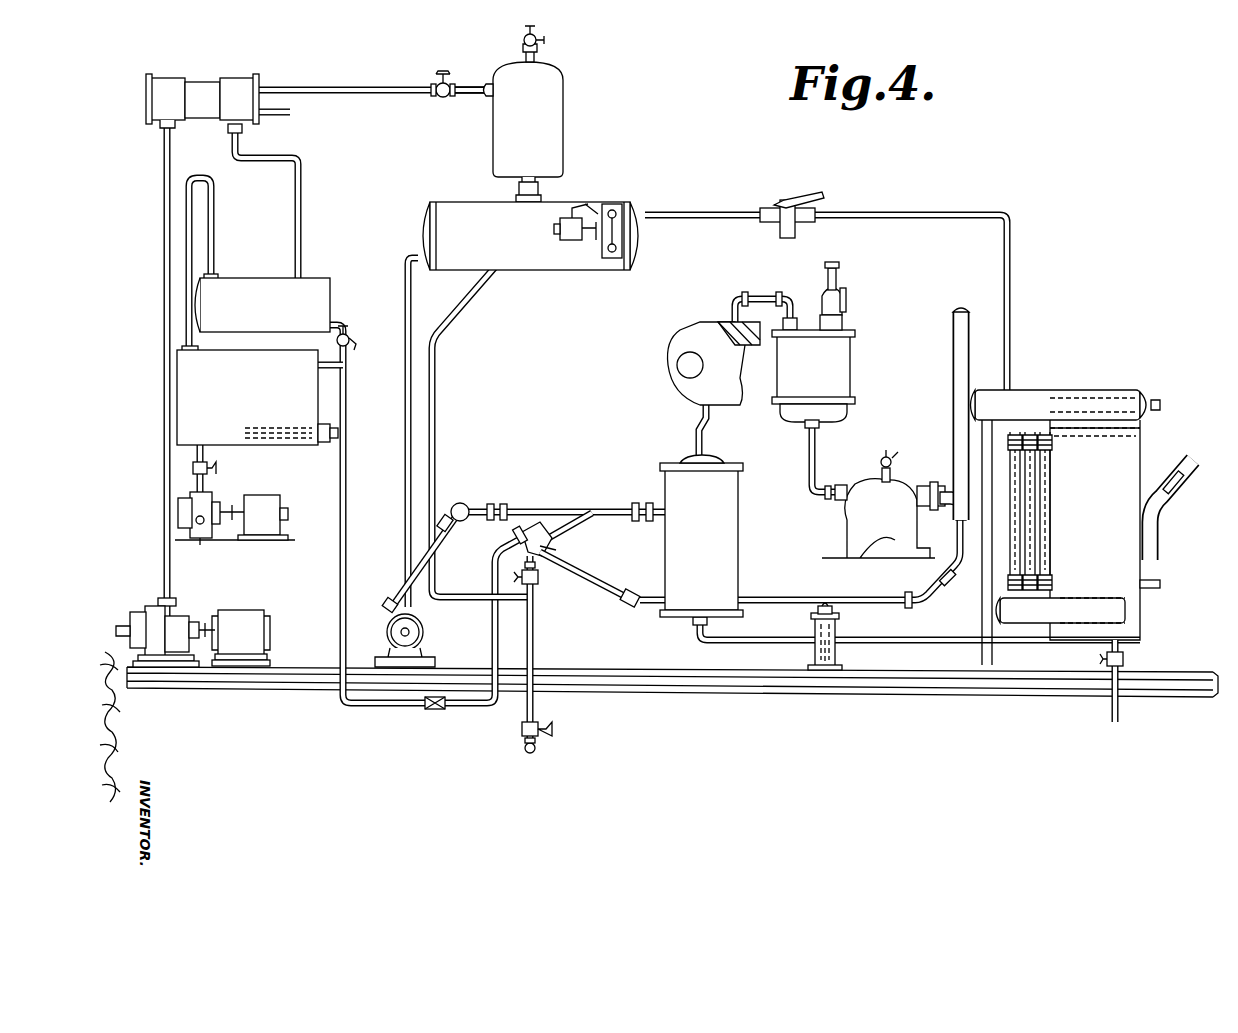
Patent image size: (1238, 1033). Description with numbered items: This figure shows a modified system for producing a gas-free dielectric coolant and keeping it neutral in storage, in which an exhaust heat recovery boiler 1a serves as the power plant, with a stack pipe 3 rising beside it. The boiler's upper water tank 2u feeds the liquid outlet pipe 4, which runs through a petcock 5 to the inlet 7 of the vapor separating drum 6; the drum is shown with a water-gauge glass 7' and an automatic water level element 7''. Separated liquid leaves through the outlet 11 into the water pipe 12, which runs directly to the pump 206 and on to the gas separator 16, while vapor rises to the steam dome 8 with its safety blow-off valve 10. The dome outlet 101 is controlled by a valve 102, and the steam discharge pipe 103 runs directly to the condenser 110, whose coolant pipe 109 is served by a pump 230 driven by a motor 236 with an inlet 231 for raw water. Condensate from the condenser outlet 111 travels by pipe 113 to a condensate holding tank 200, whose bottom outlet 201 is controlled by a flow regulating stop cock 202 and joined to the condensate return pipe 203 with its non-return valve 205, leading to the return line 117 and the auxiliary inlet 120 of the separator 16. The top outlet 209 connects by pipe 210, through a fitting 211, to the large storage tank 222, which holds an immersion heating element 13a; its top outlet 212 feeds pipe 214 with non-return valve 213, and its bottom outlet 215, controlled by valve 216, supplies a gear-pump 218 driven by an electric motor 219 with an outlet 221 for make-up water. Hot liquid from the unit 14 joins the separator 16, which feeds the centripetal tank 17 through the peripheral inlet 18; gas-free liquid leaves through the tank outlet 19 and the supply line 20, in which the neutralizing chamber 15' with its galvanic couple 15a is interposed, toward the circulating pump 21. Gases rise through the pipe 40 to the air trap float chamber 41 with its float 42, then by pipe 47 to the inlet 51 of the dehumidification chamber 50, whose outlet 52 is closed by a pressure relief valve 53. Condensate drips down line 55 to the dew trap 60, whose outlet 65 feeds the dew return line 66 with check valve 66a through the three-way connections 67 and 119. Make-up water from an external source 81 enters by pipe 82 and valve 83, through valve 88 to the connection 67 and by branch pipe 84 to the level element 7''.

The exhaust heat recovery boiler 1a is at (1114, 392).
The upper water tank 2u is at (1032, 402).
The steam stack pipe 3 is at (1007, 390).
The pipe 4 is at (1010, 250).
The petcock 5 is at (792, 202).
The vapor separating drum 6 is at (460, 204).
The inlet 7 is at (822, 194).
The water-gauge glass 7' is at (639, 231).
The automatic water level element 7'' is at (576, 249).
The steam dome 8 is at (560, 110).
The safety blow-off valve 10 is at (545, 42).
The outlet 11 is at (410, 250).
The pipe 12 is at (404, 478).
The immersion heating element 13a is at (286, 442).
The unit 14 is at (814, 640).
The neutralizing chamber 15' is at (848, 615).
The anodic-cathodic galvanic couple 15a is at (836, 657).
The gas separator unit 16 is at (576, 510).
The centripetal tank 17 is at (662, 492).
The peripheral inlet 18 is at (725, 515).
The tank outlet 19 is at (698, 630).
The supply line 20 is at (770, 643).
The circulating pump 21 is at (1042, 606).
The upwardly extending pipe 40 is at (700, 434).
The air trap float chamber 41 is at (686, 400).
The float 42 is at (680, 364).
The pipe 47 is at (752, 298).
The dehumidification chamber 50 is at (777, 388).
The inlet 51 is at (795, 305).
The outlet 52 is at (842, 326).
The pressure relief valve 53 is at (840, 280).
The drip line 55 is at (818, 449).
The dew trap 60 is at (896, 478).
The outlet 65 is at (952, 528).
The dew return line 66 is at (873, 600).
The check valve 66a is at (634, 606).
The three-way connection 67 is at (565, 563).
The external source 81 is at (531, 754).
The pipe 82 is at (534, 644).
The valve 83 is at (548, 730).
The branch pipe 84 is at (437, 392).
The valve 88 is at (540, 584).
The outlet 101 is at (462, 84).
The valve 102 is at (440, 98).
The steam discharge pipe 103 is at (316, 88).
The coolant pipe 109 is at (275, 112).
The condenser 110 is at (204, 80).
The condenser outlet 111 is at (230, 131).
The pipe 113 is at (300, 240).
The line 117 is at (524, 532).
The three-way connection 119 is at (548, 547).
The auxiliary inlet 120 is at (552, 538).
The condensate holding tank 200 is at (331, 306).
The bottom outlet 201 is at (346, 326).
The flow regulating stop cock 202 is at (350, 343).
The condensate return pipe 203 is at (338, 434).
The non-return valve 205 is at (437, 710).
The pump 206 is at (428, 632).
The top outlet 209 is at (214, 276).
The pipe 210 is at (205, 176).
The fitting 211 is at (182, 350).
The top outlet 212 is at (234, 368).
The non-return valve 213 is at (266, 371).
The pipe 214 is at (331, 371).
The bottom outlet 215 is at (206, 452).
The valve 216 is at (212, 470).
The gear-pump 218 is at (180, 514).
The electric motor 219 is at (266, 500).
The outlet 221 is at (194, 528).
The liquid storage tank 222 is at (179, 400).
The pump 230 is at (170, 598).
The inlet 231 is at (148, 612).
The motor 236 is at (266, 634).